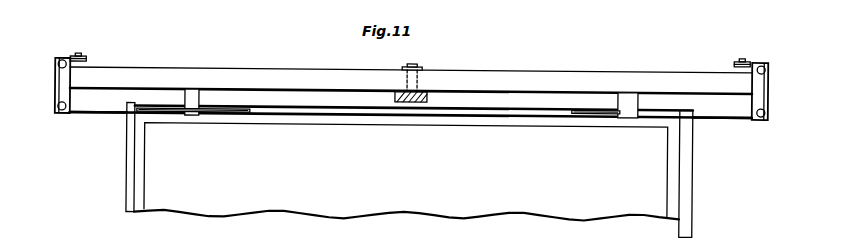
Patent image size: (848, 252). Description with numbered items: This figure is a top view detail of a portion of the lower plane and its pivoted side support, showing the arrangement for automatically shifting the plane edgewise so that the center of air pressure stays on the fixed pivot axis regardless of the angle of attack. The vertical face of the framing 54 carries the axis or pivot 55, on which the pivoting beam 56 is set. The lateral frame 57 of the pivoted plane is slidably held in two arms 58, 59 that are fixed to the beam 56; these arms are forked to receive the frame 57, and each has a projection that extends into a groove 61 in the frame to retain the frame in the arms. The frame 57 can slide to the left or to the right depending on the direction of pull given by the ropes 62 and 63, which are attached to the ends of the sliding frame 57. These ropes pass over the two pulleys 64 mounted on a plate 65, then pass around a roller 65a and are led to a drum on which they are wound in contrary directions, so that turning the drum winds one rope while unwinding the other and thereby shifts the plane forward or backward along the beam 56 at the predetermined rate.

The framing 54 is at (428, 92).
The axis or pivot 55 is at (415, 62).
The pivoting beam 56 is at (660, 80).
The lateral frame of the pivoted plane 57 is at (478, 106).
The arm 58 is at (196, 87).
The arm 59 is at (628, 95).
The groove 61 is at (237, 112).
The rope 62 is at (88, 114).
The rope 63 is at (700, 112).
The pulley 64 is at (60, 113).
The plate 65 is at (66, 96).
The roller 65a is at (84, 55).